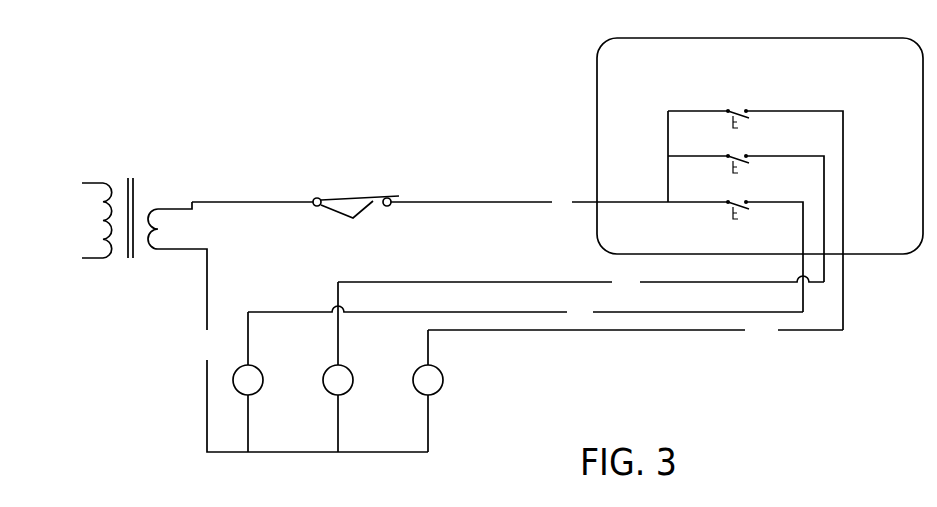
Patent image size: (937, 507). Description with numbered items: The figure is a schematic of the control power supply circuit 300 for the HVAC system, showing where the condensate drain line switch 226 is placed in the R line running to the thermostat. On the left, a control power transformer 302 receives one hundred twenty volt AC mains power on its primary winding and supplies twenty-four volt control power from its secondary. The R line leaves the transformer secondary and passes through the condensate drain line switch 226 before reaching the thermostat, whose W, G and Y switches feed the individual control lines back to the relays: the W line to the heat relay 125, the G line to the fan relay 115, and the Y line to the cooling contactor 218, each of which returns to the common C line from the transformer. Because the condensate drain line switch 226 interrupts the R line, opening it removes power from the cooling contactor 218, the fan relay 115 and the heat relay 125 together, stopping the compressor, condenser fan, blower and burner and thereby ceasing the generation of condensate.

The control power supply circuit 300 is at (472, 56).
The control power transformer 302 is at (127, 288).
The condensate drain line switch 226 is at (366, 204).
The cooling contactor 218 is at (253, 394).
The fan relay 115 is at (343, 394).
The heat relay 125 is at (433, 394).